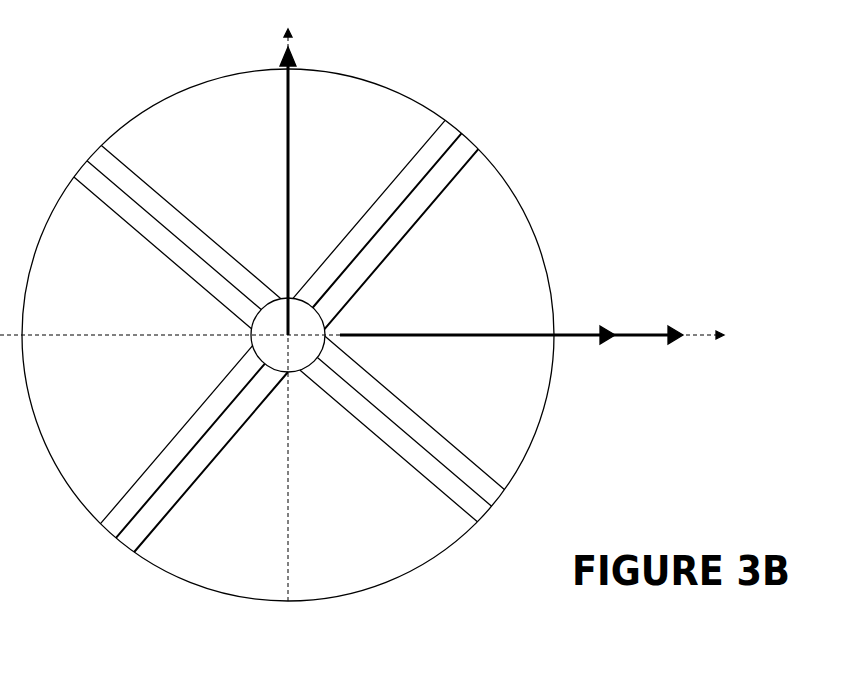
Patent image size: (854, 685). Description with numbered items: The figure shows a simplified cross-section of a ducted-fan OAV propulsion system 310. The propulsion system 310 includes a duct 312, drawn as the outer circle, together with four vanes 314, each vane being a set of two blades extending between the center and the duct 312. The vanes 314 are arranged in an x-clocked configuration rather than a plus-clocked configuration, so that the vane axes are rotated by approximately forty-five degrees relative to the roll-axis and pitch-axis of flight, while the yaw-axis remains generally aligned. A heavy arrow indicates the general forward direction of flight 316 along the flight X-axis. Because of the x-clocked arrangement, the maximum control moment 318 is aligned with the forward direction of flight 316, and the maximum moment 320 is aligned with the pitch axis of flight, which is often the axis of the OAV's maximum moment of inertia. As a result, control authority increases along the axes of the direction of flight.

The propulsion system 310 is at (362, 316).
The duct 312 is at (542, 413).
The vanes 314 is at (157, 198).
The general forward direction of flight 316 is at (635, 335).
The maximum control moment 318 is at (588, 328).
The maximum moment 320 is at (280, 65).